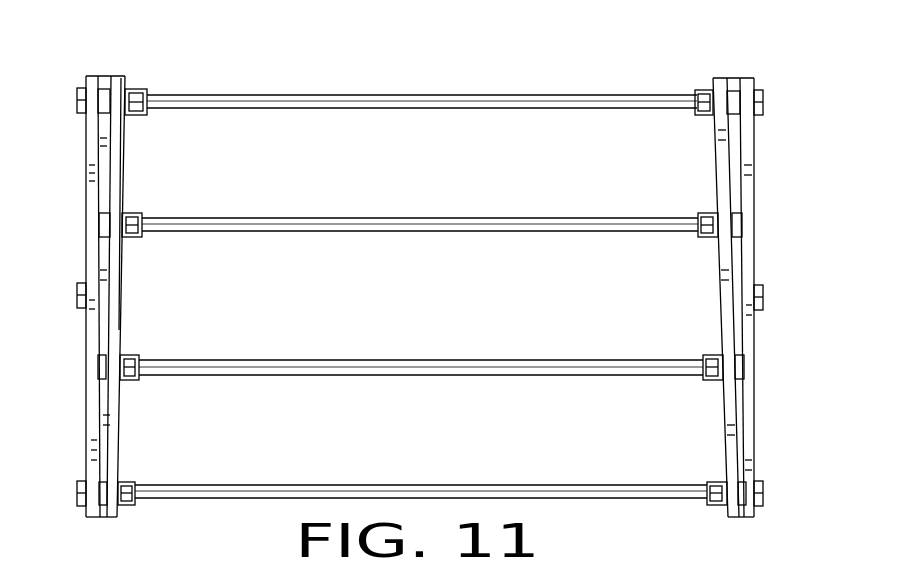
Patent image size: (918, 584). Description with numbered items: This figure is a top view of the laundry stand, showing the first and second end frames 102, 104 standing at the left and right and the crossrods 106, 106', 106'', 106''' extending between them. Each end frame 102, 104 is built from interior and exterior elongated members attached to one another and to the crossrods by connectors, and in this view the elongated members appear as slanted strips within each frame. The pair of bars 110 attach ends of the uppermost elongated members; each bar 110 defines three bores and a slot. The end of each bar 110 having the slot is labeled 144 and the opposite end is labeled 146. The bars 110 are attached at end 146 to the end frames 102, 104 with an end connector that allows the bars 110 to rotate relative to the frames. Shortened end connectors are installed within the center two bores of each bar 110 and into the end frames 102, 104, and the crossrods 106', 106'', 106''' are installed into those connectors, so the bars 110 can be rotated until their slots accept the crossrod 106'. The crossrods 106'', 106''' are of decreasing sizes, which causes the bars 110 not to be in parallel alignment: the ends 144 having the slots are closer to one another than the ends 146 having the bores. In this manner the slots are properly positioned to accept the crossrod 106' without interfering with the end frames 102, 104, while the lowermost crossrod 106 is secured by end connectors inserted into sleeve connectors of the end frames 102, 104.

The first end frame 102 is at (85, 243).
The second end frame 104 is at (755, 247).
The crossrod 106 is at (422, 471).
The crossrod 106' is at (419, 79).
The crossrod 106'' is at (421, 346).
The crossrod 106''' is at (420, 205).
The bar 110 is at (121, 137).
The end of bar having slot 144 is at (120, 76).
The end of bar with bores 146 is at (105, 517).